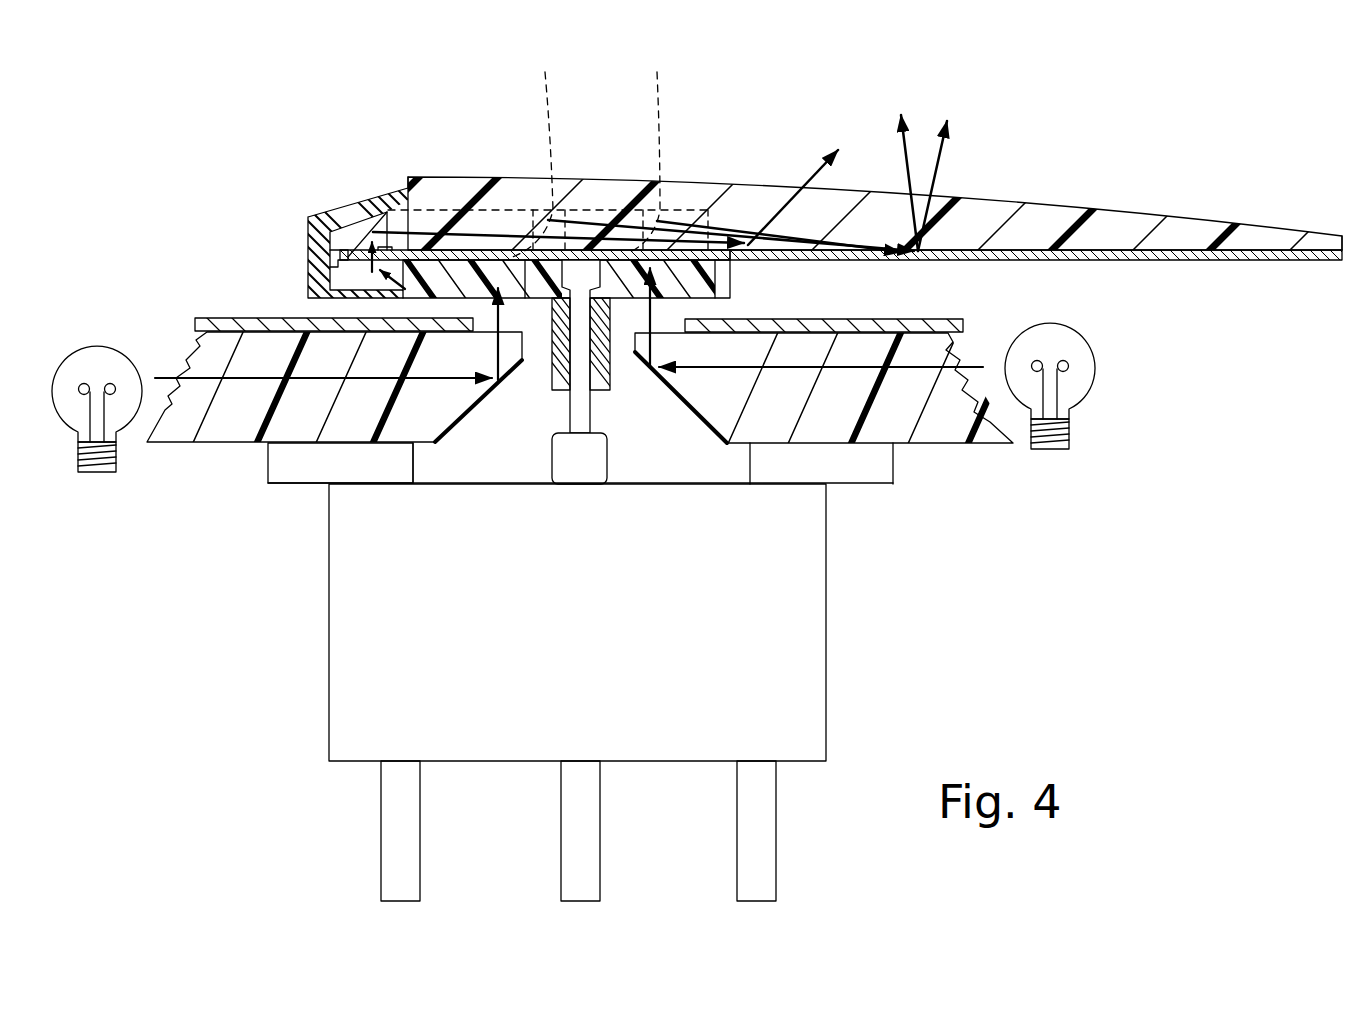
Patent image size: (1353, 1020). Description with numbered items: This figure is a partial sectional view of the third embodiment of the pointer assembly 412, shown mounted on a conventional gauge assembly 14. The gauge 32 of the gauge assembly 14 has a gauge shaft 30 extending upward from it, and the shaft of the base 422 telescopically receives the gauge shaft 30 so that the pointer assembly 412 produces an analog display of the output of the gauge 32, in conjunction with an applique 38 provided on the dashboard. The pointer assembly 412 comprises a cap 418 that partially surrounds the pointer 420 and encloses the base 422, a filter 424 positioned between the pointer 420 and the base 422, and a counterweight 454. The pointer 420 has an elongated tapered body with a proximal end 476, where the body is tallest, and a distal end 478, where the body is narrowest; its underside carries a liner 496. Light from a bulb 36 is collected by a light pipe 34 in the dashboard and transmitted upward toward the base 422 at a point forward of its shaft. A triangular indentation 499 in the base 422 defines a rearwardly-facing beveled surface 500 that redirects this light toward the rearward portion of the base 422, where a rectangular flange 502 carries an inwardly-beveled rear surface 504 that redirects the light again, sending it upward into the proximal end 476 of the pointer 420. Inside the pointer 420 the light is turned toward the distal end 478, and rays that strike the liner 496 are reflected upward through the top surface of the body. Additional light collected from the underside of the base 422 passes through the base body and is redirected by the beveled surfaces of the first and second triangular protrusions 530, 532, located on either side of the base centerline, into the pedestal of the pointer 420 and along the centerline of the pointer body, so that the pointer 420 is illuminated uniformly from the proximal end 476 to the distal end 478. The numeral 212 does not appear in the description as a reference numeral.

The gauge assembly 14 is at (836, 637).
The gauge shaft 30 is at (578, 410).
The gauge 32 is at (546, 660).
The light pipe 34 is at (233, 420).
The bulb 36 is at (101, 343).
The applique 38 is at (235, 319).
The light pipe 212 is at (875, 158).
The pointer assembly 412 is at (818, 143).
The cap 418 is at (340, 198).
The pointer 420 is at (692, 176).
The base 422 is at (620, 360).
The filter 424 is at (700, 261).
The counterweight 454 is at (330, 275).
The proximal end 476 is at (617, 177).
The distal end 478 is at (1343, 246).
The liner 496 is at (945, 261).
The triangular indentation 499 is at (547, 302).
The beveled surface 500 is at (493, 262).
The rectangular flange 502 is at (437, 263).
The beveled rear surface 504 is at (490, 282).
The first triangular protrusion 530 is at (655, 148).
The second triangular protrusion 532 is at (535, 151).